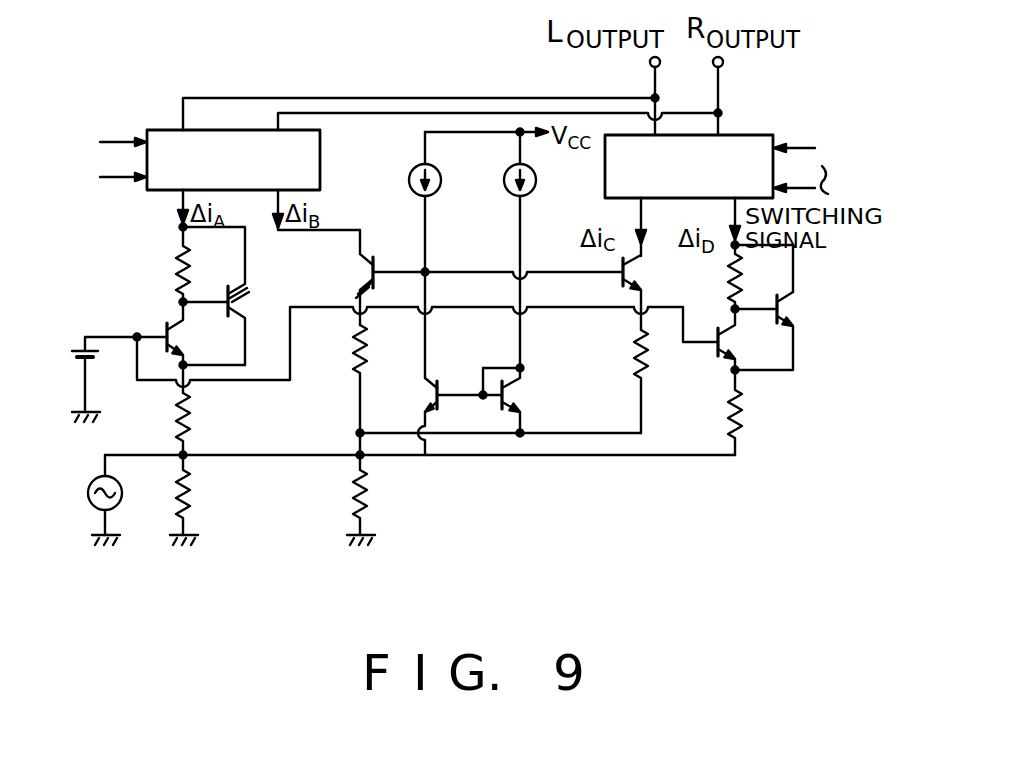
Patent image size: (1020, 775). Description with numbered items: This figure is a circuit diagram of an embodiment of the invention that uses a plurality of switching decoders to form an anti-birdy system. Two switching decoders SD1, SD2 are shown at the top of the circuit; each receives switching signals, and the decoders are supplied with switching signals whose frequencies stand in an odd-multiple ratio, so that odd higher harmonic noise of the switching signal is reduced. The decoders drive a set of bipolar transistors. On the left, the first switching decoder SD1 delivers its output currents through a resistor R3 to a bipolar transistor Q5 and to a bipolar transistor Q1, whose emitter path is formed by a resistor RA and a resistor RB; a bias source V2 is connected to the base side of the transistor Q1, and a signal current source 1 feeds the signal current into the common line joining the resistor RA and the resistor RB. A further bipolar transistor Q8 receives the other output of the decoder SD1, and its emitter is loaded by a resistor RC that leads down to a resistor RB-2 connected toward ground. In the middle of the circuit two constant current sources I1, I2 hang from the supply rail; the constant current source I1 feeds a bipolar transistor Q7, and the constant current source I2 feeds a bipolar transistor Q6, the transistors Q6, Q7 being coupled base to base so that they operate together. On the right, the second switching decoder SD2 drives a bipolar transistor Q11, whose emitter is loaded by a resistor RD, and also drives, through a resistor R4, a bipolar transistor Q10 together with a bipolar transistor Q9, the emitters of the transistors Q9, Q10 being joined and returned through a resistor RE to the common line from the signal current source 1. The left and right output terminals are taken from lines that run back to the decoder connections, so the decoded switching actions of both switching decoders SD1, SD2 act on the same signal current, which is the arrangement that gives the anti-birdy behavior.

The switching decoder SD1 is at (162, 128).
The switching decoder SD2 is at (760, 133).
The resistor R3 is at (164, 264).
The bipolar transistor Q5 is at (238, 324).
The bipolar transistor Q1 is at (185, 333).
The bias voltage source V2 is at (104, 379).
The resistor RA is at (201, 424).
The resistor RB is at (198, 500).
The signal current source 1 is at (118, 508).
The bipolar transistor Q8 is at (340, 289).
The resistor RC is at (379, 390).
The resistor RB-2 is at (387, 500).
The bipolar transistor Q7 is at (426, 363).
The bipolar transistor Q6 is at (532, 400).
The constant current source I1 is at (436, 202).
The constant current source I2 is at (532, 250).
The bipolar transistor Q11 is at (670, 292).
The resistor RD is at (617, 381).
The resistor R4 is at (752, 277).
The bipolar transistor Q10 is at (802, 331).
The bipolar transistor Q9 is at (758, 342).
The resistor RE is at (754, 412).